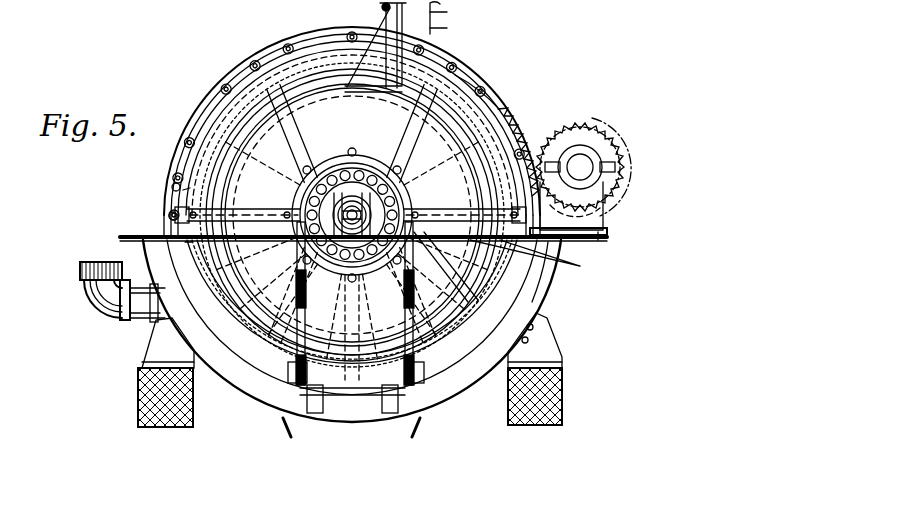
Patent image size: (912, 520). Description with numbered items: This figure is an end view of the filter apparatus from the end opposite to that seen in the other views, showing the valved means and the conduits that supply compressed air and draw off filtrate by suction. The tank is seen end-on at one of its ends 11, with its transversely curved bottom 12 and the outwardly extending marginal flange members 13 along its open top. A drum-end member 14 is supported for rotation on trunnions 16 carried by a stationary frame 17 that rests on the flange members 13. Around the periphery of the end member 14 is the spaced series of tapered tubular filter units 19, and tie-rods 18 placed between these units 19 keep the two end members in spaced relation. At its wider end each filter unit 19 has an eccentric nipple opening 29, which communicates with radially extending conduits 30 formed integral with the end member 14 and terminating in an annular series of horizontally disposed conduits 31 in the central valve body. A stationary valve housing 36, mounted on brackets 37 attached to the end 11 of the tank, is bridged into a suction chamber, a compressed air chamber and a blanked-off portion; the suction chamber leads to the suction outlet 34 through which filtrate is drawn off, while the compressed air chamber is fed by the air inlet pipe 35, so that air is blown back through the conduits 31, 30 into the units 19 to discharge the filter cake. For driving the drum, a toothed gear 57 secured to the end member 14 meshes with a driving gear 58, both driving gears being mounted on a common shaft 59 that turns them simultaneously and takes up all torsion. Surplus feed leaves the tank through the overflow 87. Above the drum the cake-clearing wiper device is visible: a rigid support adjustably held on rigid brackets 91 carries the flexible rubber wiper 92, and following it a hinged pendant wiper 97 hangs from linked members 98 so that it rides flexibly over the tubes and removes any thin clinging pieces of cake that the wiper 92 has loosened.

The ends 11 is at (240, 378).
The bottom 12 is at (472, 180).
The marginal flange members 13 is at (142, 234).
The drum-end members 14 is at (200, 140).
The trunnions 16 is at (162, 188).
The stationary frames 17 is at (196, 172).
The tie-rods 18 is at (222, 62).
The filter units 19 is at (338, 30).
The nipple opening 29 is at (540, 302).
The radially extending conduits 30 is at (388, 241).
The horizontally disposed conduits 31 is at (352, 223).
The suction outlet 34 is at (346, 317).
The compressed air inlet pipe 35 is at (440, 76).
The stationary valve housing 36 is at (384, 317).
The brackets 37 is at (442, 262).
The toothed gears 57 is at (528, 138).
The driving gears 58 is at (594, 126).
The common shaft 59 is at (580, 172).
The overflow 87 is at (100, 294).
The rigid brackets 91 is at (382, 8).
The flexible wiper 92 is at (394, 22).
The hinged pendant wiper 97 is at (450, 29).
The linked members 98 is at (449, 13).